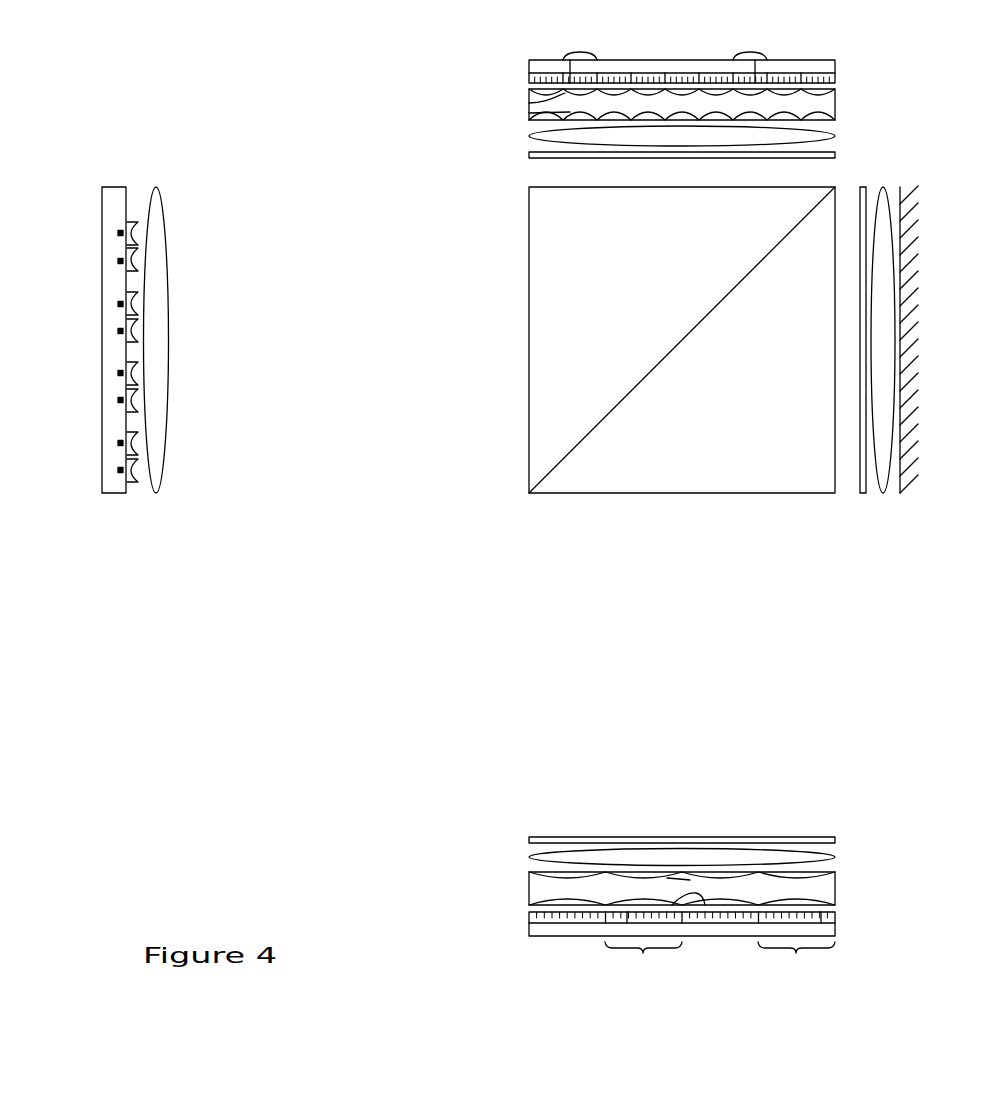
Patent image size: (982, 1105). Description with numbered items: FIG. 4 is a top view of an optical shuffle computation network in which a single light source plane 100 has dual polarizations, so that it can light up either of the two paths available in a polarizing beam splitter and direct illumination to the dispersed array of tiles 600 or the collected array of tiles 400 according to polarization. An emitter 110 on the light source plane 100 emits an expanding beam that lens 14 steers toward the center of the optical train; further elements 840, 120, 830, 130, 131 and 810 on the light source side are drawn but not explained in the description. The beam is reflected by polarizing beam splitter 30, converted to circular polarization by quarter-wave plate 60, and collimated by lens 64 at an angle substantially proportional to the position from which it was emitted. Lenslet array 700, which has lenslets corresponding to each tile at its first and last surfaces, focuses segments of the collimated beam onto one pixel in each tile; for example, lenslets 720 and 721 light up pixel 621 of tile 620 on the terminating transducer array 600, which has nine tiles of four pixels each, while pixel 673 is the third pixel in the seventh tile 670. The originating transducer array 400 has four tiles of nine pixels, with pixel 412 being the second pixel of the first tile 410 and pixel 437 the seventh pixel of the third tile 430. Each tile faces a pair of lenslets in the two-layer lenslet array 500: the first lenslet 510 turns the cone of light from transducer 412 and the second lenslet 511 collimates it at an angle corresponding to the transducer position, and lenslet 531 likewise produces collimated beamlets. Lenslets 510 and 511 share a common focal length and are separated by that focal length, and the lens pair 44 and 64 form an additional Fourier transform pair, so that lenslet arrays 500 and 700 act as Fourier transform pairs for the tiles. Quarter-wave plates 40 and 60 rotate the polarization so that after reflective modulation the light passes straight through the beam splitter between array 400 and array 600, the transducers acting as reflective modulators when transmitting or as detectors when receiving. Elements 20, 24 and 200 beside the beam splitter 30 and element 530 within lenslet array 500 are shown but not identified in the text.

The light source plane 100 is at (116, 187).
The lens 14 is at (156, 187).
The emitter 110 is at (118, 233).
The light emitting element 840 is at (118, 261).
The light emitting element 120 is at (118, 304).
The light emitting element 830 is at (118, 331).
The light emitting element 130 is at (118, 373).
The collimating lens element 131 is at (128, 381).
The light emitting element 810 is at (118, 470).
The terminating transducer array 600 is at (835, 60).
The tile 620 is at (580, 52).
The pixel 621 is at (570, 60).
The tile 670 is at (748, 52).
The pixel 673 is at (755, 60).
The lenslet array 700 is at (835, 102).
The lenslet 720 is at (529, 103).
The lenslet 721 is at (529, 113).
The lens 64 is at (835, 136).
The quarter-wave plate 60 is at (835, 155).
The polarizing beam splitter 30 is at (703, 187).
The plate 20 is at (862, 493).
The lens 24 is at (883, 493).
The screen 200 is at (900, 493).
The quarter-wave plate 40 is at (529, 840).
The lens 44 is at (529, 858).
The lenslet array 500 is at (529, 888).
The second lenslet 511 is at (835, 887).
The first lenslet 510 is at (835, 897).
The microlens 530 is at (697, 905).
The lenslet 531 is at (667, 878).
The originating transducer array 400 is at (529, 925).
The tile 430 is at (643, 962).
The pixel 437 is at (627, 923).
The tile 410 is at (796, 962).
The pixel 412 is at (821, 923).